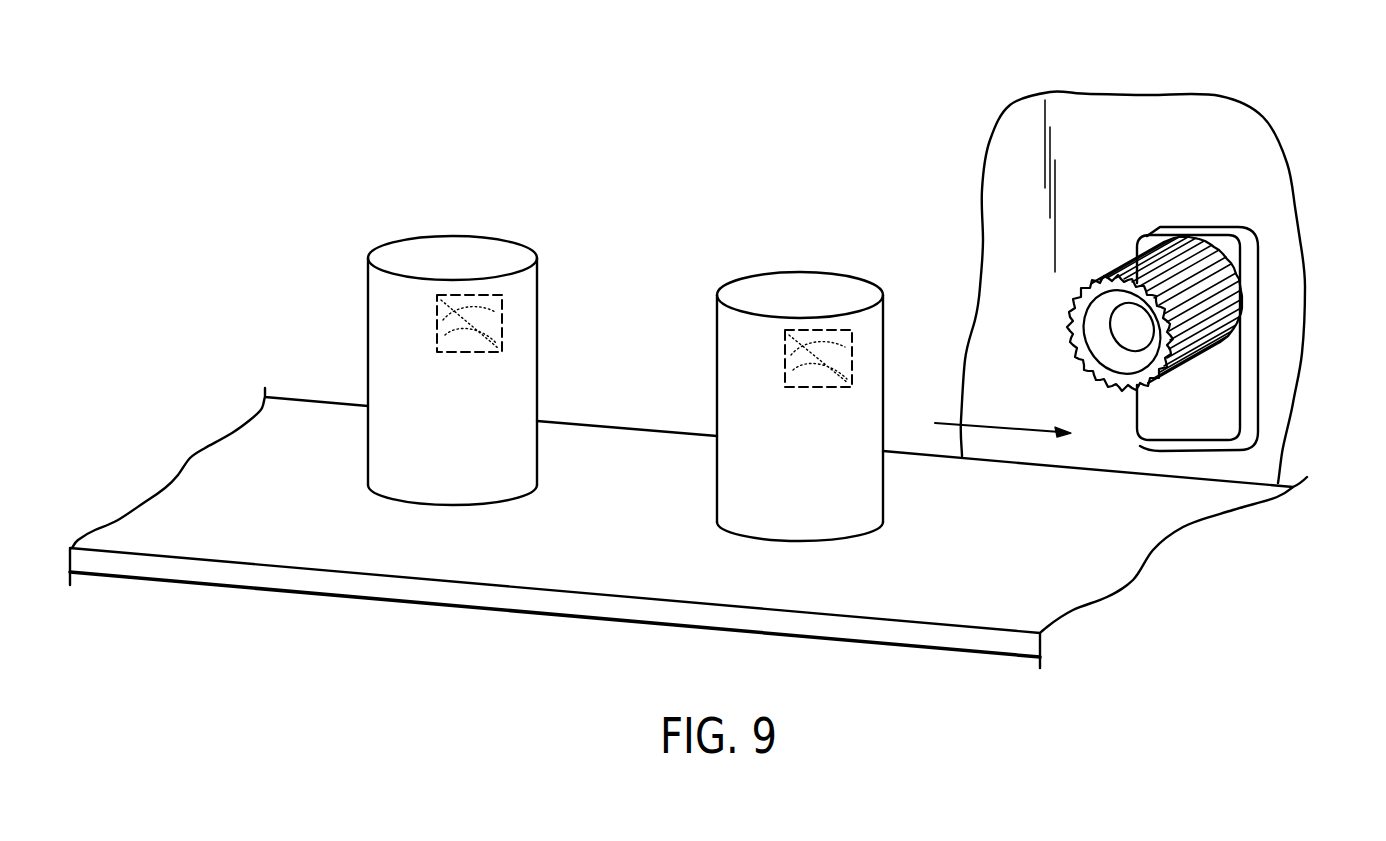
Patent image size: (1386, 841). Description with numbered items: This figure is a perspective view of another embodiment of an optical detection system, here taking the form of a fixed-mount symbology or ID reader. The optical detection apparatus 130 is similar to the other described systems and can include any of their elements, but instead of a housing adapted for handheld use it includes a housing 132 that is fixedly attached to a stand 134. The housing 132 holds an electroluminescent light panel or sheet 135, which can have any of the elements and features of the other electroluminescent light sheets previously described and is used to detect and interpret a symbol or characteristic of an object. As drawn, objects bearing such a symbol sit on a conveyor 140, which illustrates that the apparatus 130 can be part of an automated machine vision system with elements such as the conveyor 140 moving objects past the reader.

The optical detection apparatus 130 is at (1325, 195).
The housing 132 is at (1250, 382).
The stand 134 is at (1203, 115).
The electroluminescent light panel 135 is at (1125, 323).
The conveyor 140 is at (483, 595).